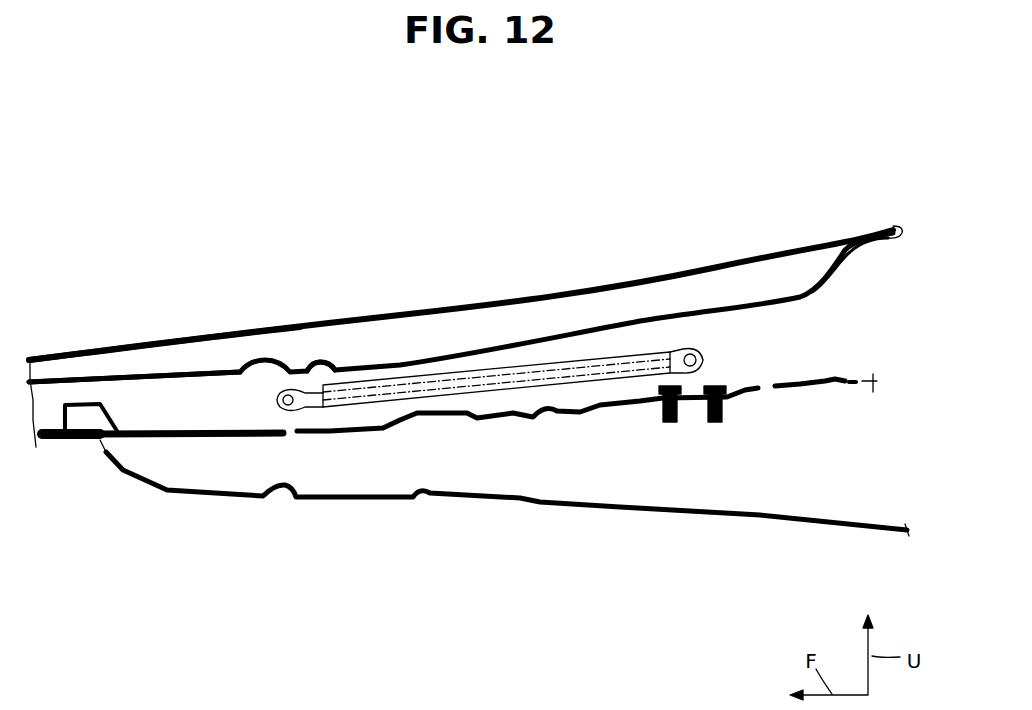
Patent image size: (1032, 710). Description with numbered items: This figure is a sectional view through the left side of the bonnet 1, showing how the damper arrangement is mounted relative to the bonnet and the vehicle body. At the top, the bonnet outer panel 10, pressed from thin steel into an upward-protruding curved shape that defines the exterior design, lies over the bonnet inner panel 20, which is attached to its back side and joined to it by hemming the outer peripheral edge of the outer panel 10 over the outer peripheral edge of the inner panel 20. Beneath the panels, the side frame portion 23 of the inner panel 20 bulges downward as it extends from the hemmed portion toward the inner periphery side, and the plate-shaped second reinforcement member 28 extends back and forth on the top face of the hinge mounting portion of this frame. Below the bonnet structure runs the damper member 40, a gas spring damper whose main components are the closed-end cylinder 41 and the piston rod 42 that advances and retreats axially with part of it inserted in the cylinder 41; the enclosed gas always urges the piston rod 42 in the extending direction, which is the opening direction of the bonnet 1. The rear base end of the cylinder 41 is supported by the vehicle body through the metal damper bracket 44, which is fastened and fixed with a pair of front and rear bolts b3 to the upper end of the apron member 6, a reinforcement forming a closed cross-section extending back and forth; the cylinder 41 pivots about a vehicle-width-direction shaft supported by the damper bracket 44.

The bonnet 1 is at (714, 232).
The bonnet outer panel 10 is at (112, 348).
The bonnet inner panel 20 is at (142, 395).
The side frame portion 23 is at (130, 378).
The second reinforcement member 28 is at (328, 362).
The damper member 40 is at (585, 388).
The cylinder 41 is at (509, 390).
The piston rod 42 is at (320, 408).
The damper bracket 44 is at (700, 383).
The bolt b3 is at (673, 423).
The apron member 6 is at (827, 380).